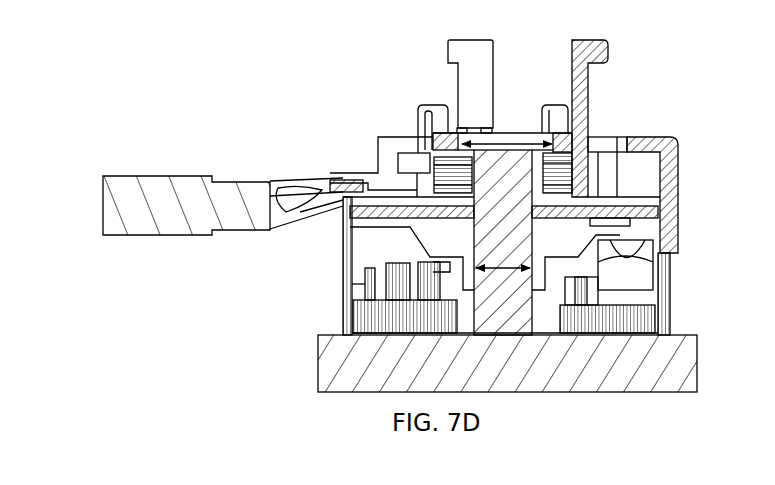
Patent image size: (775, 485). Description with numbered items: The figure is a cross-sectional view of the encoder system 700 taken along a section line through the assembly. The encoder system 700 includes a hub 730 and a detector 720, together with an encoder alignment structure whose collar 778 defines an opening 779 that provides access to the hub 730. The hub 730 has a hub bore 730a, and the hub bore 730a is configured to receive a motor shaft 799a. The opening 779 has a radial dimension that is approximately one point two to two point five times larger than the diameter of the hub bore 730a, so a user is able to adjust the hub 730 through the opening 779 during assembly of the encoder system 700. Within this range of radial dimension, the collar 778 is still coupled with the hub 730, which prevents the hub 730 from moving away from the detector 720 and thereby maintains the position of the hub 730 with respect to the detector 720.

The encoder system 700 is at (68, 81).
The detector 720 is at (660, 208).
The hub 730 is at (598, 244).
The hub bore 730a is at (636, 312).
The collar 778 is at (551, 110).
The opening 779 is at (433, 135).
The motor shaft 799a is at (380, 312).